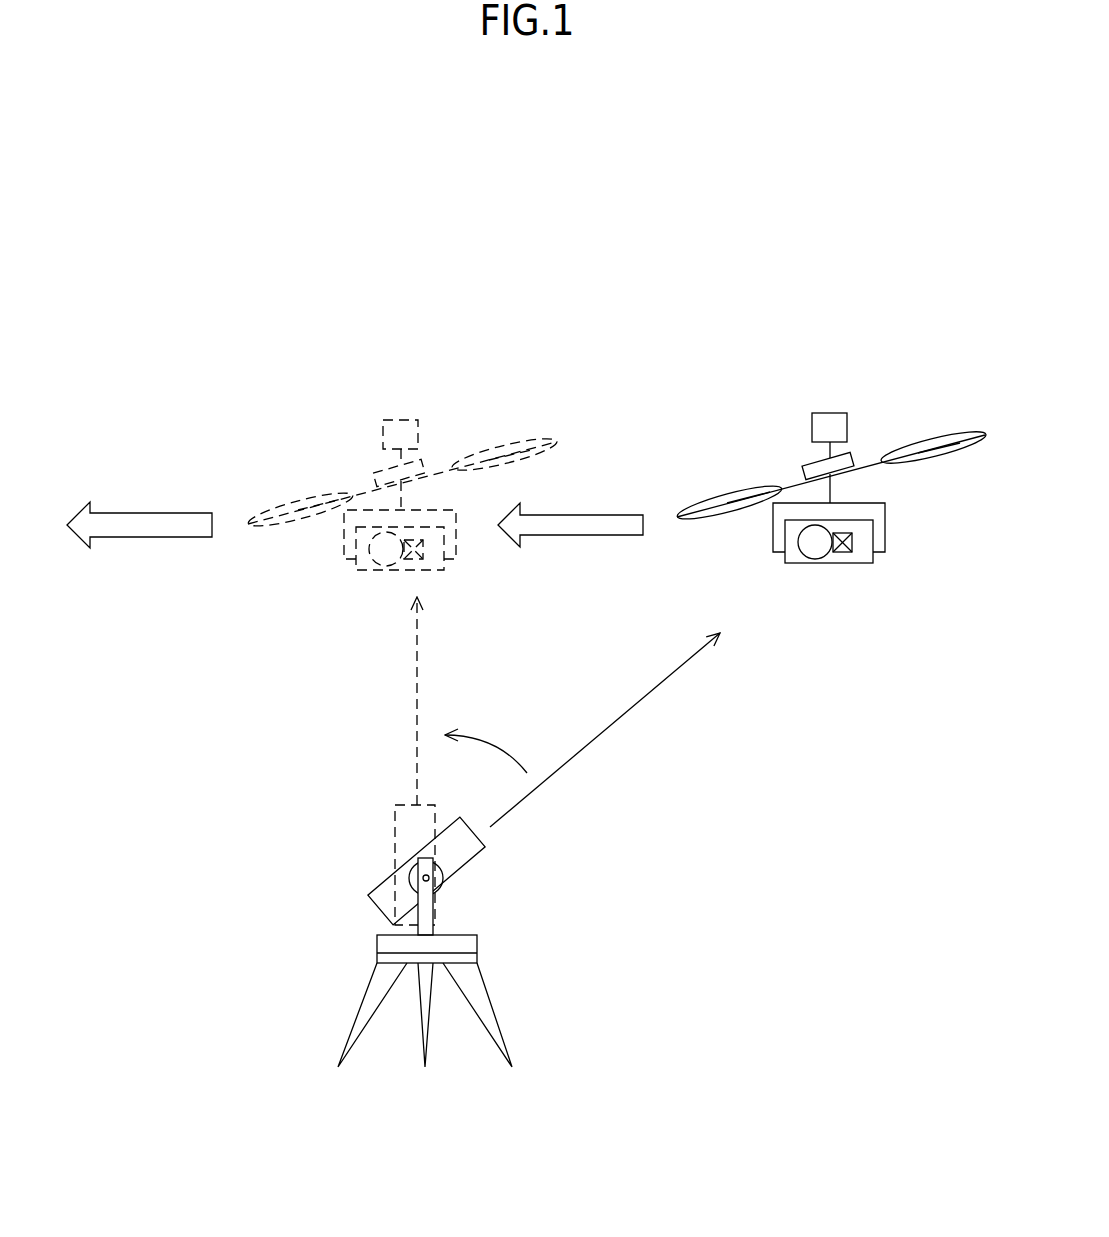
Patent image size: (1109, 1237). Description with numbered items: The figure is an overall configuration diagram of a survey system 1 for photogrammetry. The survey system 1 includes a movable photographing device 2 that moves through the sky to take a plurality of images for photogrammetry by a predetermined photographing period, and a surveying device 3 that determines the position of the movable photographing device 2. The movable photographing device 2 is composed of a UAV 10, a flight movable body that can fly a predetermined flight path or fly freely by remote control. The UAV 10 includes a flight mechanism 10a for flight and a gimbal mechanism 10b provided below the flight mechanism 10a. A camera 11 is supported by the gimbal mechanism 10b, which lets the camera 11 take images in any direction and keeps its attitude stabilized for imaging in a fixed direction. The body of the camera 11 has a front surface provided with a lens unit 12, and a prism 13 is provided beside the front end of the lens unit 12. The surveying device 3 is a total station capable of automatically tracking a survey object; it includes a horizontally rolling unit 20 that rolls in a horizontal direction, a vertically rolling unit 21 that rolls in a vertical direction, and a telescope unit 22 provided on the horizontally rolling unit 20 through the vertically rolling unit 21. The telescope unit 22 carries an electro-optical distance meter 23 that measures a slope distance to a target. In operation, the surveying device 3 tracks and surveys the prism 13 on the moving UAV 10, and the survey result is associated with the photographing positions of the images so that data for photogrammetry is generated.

The survey system 1 is at (630, 262).
The movable photographing device 2 is at (829, 392).
The surveying device 3 is at (361, 870).
The UAV 10 is at (863, 454).
The flight mechanism 10a is at (803, 463).
The gimbal mechanism 10b is at (773, 522).
The camera 11 is at (873, 563).
The lens unit 12 is at (807, 553).
The prism 13 is at (842, 548).
The horizontally rolling unit 20 is at (468, 931).
The vertically rolling unit 21 is at (383, 905).
The telescope unit 22 is at (468, 867).
The electro-optical distance meter 23 is at (426, 871).